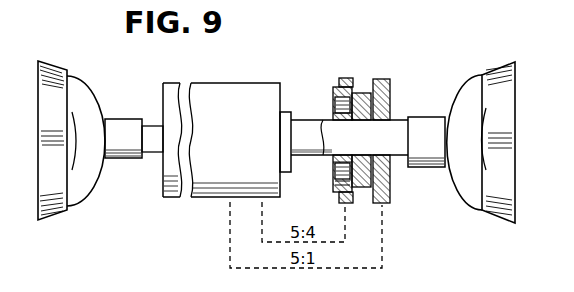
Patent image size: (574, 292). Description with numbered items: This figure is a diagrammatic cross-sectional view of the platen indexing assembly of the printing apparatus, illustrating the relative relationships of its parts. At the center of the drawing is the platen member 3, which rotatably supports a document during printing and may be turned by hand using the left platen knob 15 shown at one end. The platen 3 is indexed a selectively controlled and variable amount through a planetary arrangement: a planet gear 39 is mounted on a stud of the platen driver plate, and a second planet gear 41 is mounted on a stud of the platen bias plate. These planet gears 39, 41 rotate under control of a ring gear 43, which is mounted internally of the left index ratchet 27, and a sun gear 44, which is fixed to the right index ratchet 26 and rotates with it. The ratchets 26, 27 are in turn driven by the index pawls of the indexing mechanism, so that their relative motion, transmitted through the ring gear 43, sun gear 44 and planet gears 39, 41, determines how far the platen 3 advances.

The left platen knob 15 is at (66, 71).
The platen member 3 is at (250, 89).
The planet gear 41 is at (339, 97).
The left index ratchet 27 is at (346, 78).
The ring gear 43 is at (359, 94).
The right index ratchet 26 is at (390, 80).
The sun gear 44 is at (337, 117).
The planet gear 39 is at (341, 187).